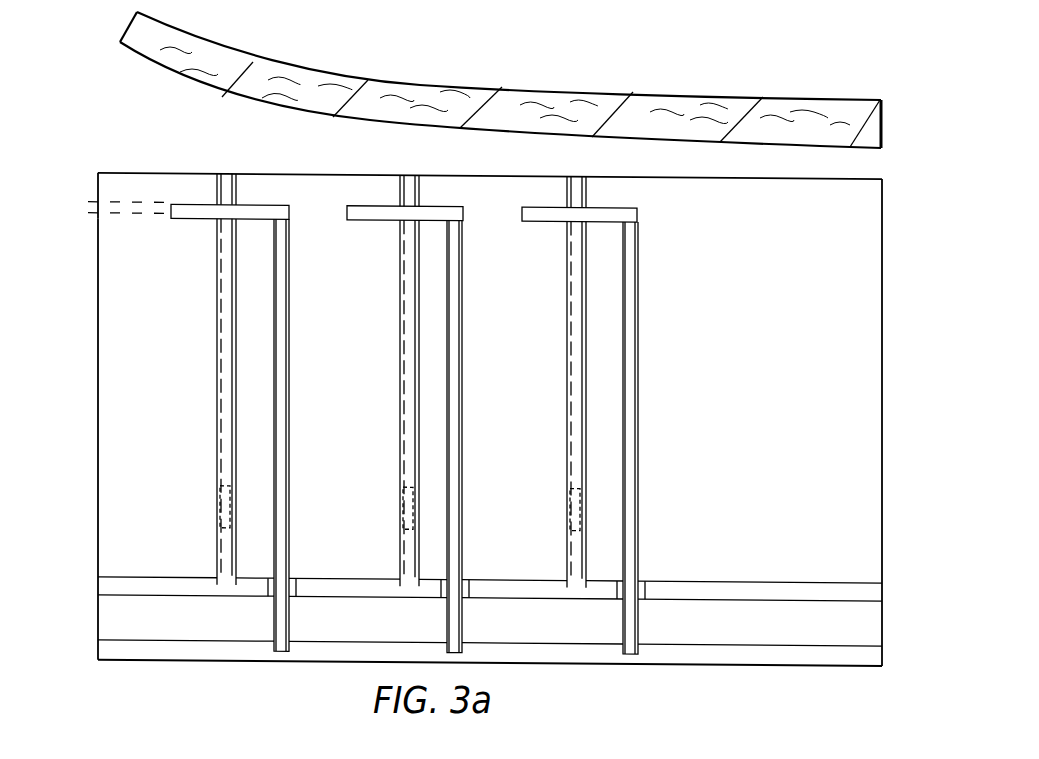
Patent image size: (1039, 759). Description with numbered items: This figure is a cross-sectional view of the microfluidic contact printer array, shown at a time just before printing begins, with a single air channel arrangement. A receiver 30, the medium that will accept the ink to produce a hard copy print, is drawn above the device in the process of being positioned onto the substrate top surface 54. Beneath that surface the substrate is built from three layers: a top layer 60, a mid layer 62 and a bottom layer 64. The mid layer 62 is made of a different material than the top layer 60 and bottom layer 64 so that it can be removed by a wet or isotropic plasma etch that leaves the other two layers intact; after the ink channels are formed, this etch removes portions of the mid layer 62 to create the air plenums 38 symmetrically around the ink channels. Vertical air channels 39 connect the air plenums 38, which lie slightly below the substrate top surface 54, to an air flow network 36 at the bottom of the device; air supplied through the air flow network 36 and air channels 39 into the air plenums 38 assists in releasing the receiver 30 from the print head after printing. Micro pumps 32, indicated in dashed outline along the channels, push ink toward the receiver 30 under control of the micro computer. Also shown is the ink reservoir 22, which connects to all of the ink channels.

The ink reservoir 22 is at (767, 588).
The receiver 30 is at (661, 93).
The micro pumps 32 is at (220, 507).
The air flow network 36 is at (755, 655).
The air plenums 38 is at (258, 203).
The air channels 39 is at (289, 348).
The substrate top surface 54 is at (152, 173).
The top layer 60 is at (94, 186).
The mid layer 62 is at (90, 209).
The bottom layer 64 is at (95, 231).